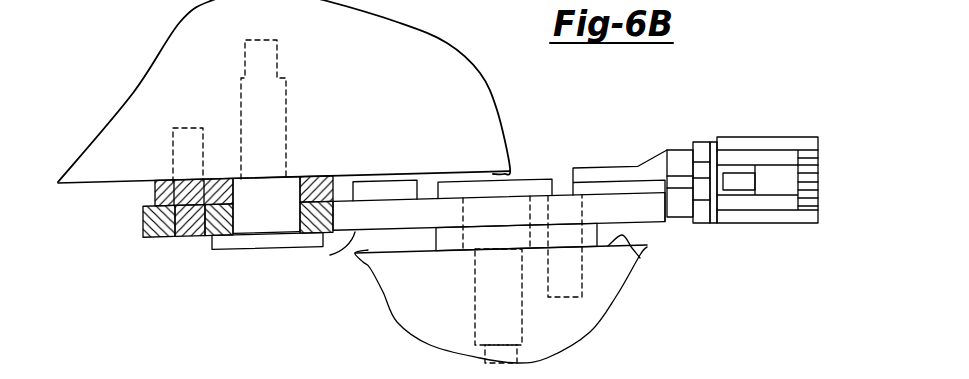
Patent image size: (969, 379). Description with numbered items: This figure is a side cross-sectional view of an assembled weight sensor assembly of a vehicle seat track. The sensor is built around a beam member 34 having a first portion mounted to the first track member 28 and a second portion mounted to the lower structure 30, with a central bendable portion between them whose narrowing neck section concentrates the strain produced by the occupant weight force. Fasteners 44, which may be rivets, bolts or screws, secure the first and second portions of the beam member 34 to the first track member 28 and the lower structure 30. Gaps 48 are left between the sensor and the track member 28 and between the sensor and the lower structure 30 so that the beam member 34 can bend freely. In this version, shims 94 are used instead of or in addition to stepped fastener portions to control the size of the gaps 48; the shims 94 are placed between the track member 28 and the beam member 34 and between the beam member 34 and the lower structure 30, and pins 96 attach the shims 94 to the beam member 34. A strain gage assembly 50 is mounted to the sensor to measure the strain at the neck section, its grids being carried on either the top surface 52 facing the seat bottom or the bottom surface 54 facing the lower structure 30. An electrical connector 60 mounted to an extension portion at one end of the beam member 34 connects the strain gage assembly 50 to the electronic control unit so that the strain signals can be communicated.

The first track member 28 is at (135, 93).
The lower structure 30 is at (633, 253).
The beam member 34 is at (155, 238).
The fasteners 44 is at (258, 205).
The gaps 48 is at (512, 167).
The strain gage assembly 50 is at (385, 173).
The top surface 52 is at (427, 197).
The bottom surface 54 is at (355, 232).
The electrical connector 60 is at (755, 133).
The shims 94 is at (155, 192).
The pins 96 is at (173, 152).